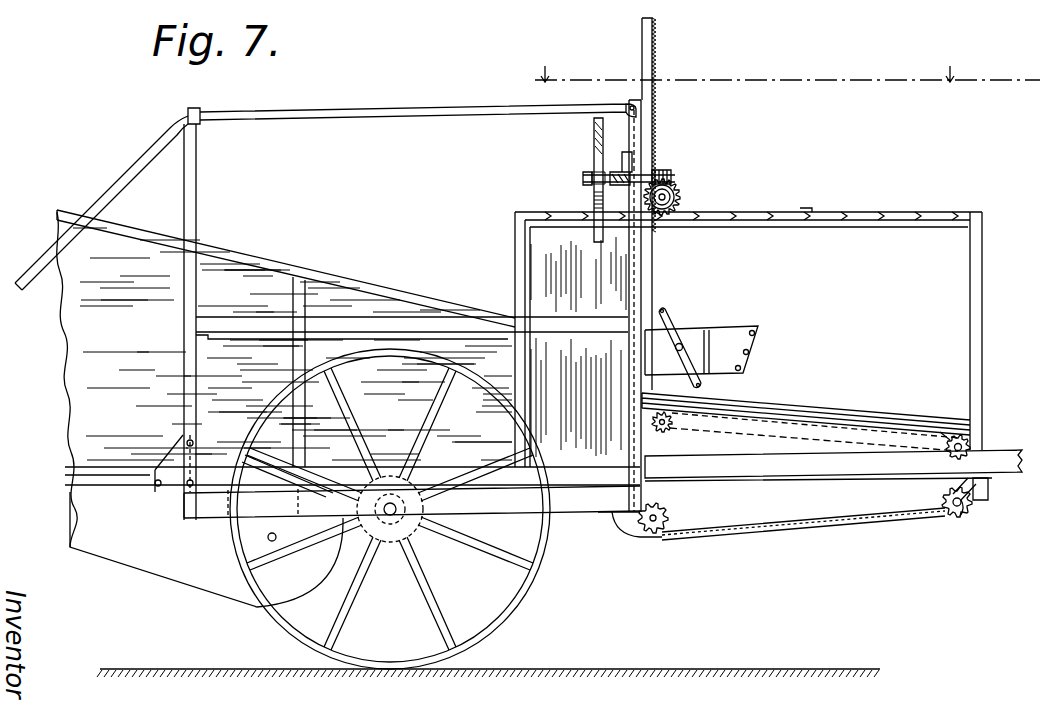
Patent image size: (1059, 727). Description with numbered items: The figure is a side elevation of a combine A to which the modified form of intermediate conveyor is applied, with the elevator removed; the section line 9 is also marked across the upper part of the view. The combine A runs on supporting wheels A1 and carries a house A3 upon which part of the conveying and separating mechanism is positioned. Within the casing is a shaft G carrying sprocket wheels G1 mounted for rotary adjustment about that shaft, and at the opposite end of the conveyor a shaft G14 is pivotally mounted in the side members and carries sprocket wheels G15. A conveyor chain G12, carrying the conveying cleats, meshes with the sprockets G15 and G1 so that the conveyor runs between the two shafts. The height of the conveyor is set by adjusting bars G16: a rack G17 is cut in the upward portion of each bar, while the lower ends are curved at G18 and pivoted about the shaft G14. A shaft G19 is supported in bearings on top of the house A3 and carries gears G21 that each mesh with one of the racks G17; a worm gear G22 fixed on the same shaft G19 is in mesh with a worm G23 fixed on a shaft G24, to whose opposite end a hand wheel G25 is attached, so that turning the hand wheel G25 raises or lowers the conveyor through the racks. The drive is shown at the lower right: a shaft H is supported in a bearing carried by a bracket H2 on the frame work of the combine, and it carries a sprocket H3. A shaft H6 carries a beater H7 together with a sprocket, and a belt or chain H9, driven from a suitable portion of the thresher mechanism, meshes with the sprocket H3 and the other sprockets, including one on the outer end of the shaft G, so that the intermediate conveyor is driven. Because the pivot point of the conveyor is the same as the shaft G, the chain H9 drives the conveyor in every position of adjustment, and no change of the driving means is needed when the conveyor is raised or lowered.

The section line 9- 9 is at (774, 81).
The combine A is at (232, 275).
The supporting wheel A1 is at (517, 612).
The house A3 is at (875, 245).
The shaft G is at (966, 444).
The sprocket wheel G1 is at (952, 440).
The conveyor chain G12 is at (792, 443).
The shaft G14 is at (664, 430).
The sprocket wheel G15 is at (672, 425).
The adjusting bar G16 is at (641, 47).
The rack G17 is at (657, 42).
The curved lower end G18 is at (653, 419).
The shaft G19 is at (668, 198).
The gear G21 is at (682, 194).
The worm gear G22 is at (676, 188).
The worm G23 is at (667, 170).
The shaft G24 is at (588, 178).
The hand wheel G25 is at (595, 135).
The shaft H is at (958, 508).
The bracket H2 is at (988, 490).
The sprocket H3 is at (940, 500).
The shaft H6 is at (690, 345).
The beater H7 is at (675, 320).
The belt or chain H9 is at (848, 530).